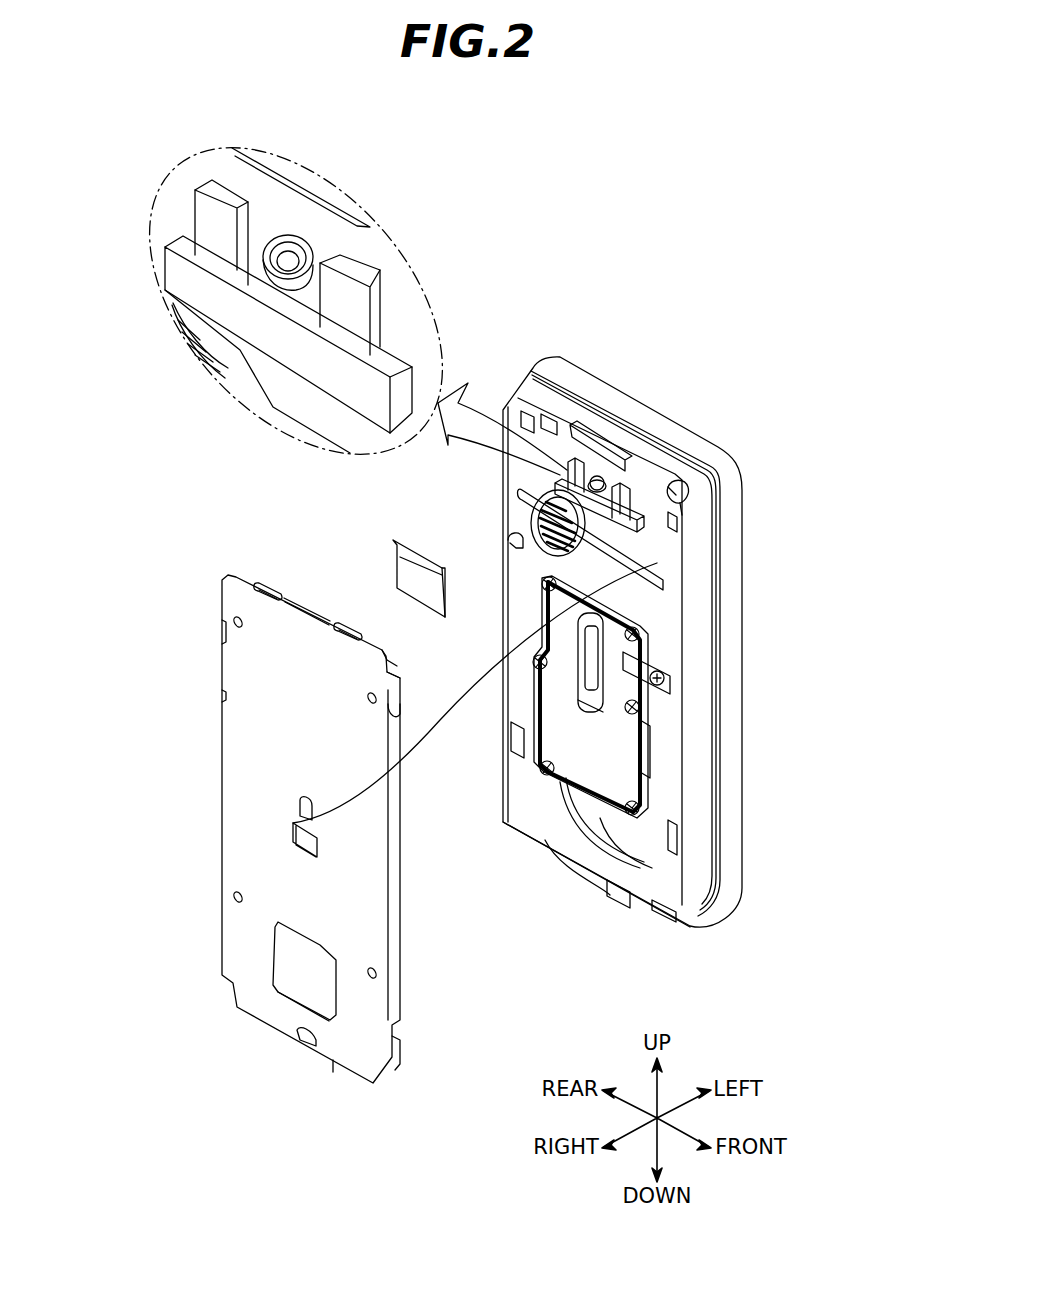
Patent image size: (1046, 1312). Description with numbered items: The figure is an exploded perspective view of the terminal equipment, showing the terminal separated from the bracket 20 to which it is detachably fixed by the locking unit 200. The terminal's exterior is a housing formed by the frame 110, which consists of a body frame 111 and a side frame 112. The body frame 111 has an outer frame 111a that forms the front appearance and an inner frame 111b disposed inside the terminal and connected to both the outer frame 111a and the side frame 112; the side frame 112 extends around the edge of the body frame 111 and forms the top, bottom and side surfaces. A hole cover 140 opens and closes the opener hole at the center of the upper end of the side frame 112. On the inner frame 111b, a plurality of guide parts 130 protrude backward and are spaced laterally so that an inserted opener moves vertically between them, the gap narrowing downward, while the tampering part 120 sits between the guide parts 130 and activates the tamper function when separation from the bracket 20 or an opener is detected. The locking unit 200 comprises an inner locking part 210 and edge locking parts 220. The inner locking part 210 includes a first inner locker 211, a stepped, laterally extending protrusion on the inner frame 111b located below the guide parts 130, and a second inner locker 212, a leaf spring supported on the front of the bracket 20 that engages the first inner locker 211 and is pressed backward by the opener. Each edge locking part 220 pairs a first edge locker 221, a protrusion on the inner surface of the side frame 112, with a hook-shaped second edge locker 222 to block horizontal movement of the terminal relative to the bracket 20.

The bracket 20 is at (232, 875).
The frame 110 is at (862, 565).
The body frame 111 is at (803, 552).
The outer frame 111a is at (718, 570).
The inner frame 111b is at (667, 603).
The side frame 112 is at (700, 658).
The tampering part 120 is at (296, 240).
The guide part 130 is at (230, 243).
The hole cover 140 is at (602, 430).
The locking unit 200 is at (332, 630).
The inner locking part 210 is at (257, 510).
The first inner locker 211 is at (327, 373).
The second inner locker 212 is at (402, 553).
The edge locking part 220 is at (363, 710).
The first edge locker 221 is at (292, 826).
The second edge locker 222 is at (390, 714).